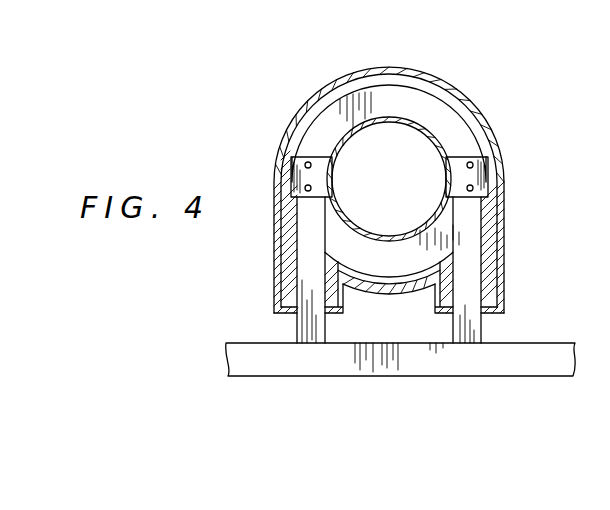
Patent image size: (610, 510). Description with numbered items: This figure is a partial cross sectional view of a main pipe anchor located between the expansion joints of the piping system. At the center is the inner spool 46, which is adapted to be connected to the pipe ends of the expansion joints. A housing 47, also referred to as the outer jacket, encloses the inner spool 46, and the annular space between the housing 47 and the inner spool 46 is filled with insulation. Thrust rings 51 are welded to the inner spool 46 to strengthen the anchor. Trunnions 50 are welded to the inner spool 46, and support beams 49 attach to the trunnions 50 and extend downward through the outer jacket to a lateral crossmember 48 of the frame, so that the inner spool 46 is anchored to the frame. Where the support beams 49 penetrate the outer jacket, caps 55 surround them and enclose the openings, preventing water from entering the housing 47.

The inner spool 46 is at (427, 120).
The housing 47 is at (432, 76).
The lateral crossmembers 48 is at (545, 378).
The support beams 49 is at (297, 330).
The trunnions 50 is at (291, 163).
The thrust rings 51 is at (378, 95).
The caps 55 is at (278, 255).